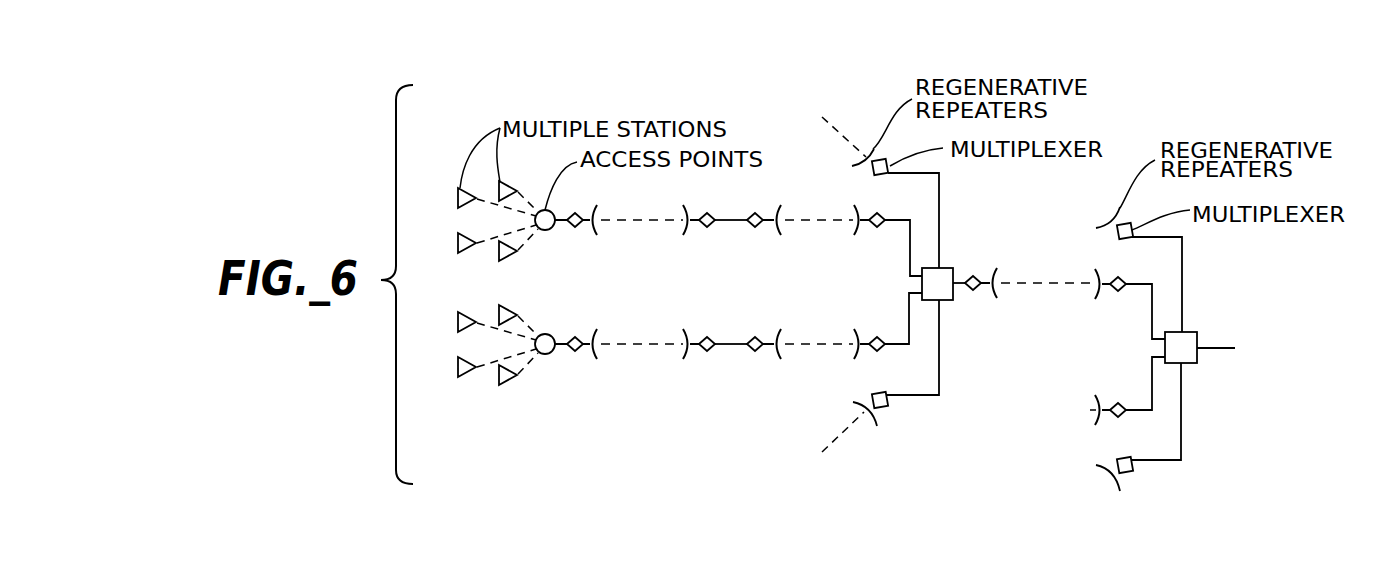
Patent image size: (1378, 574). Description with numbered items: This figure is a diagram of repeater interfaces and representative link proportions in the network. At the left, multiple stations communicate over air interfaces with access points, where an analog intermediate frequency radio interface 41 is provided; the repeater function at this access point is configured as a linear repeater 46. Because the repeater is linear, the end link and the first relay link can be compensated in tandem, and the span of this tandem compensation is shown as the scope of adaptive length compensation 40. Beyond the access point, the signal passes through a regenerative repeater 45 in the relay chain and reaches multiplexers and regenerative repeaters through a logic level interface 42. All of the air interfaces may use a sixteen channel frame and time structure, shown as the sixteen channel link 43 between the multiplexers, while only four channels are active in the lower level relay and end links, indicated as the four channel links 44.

The scope of adaptive length compensation 40 is at (460, 386).
The analog intermediate frequency radio interface 41 is at (557, 349).
The logic level interface 42 is at (723, 347).
The 16 channels 43 is at (1025, 283).
The 4 channels 44 is at (612, 222).
The regenerative repeater 45 is at (766, 238).
The linear repeater 46 is at (578, 213).